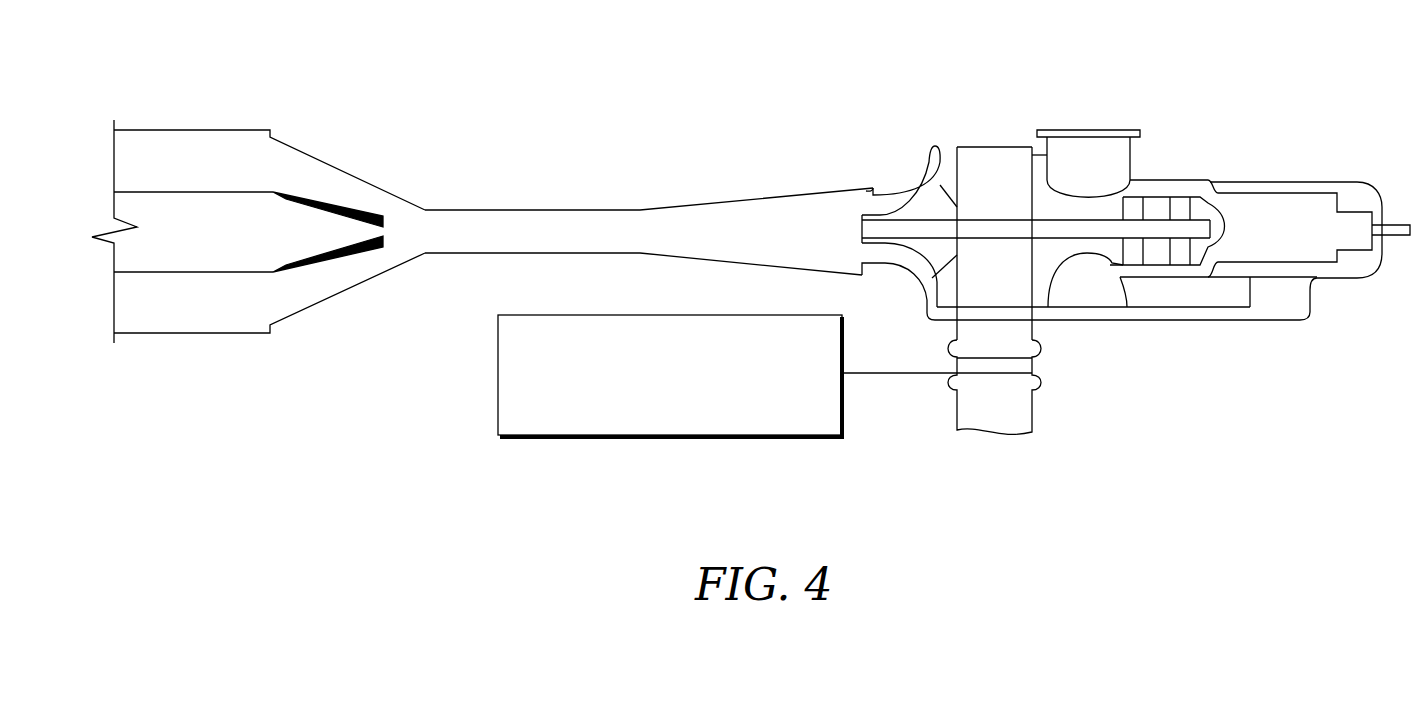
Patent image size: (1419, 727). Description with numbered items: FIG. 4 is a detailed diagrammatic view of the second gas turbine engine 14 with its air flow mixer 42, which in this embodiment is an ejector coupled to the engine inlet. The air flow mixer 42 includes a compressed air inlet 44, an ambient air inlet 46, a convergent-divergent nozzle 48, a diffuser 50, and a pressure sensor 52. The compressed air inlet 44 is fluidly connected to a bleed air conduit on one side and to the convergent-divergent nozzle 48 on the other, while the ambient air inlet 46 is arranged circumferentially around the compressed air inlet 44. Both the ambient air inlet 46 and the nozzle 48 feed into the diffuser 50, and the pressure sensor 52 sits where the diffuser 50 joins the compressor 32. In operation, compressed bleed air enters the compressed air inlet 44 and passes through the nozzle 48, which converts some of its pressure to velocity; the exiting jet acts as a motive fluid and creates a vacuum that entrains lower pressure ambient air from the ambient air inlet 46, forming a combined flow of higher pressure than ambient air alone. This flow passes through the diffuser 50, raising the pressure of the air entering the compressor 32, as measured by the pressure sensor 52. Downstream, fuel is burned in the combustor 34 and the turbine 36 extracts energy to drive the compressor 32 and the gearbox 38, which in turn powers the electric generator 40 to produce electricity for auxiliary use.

The second gas turbine engine 14 is at (1117, 242).
The compressor 32 is at (907, 185).
The combustor 34 is at (1355, 238).
The turbine 36 is at (1159, 211).
The gearbox 38 is at (1037, 368).
The electric generator 40 is at (657, 437).
The air flow mixer 42 is at (482, 221).
The compressed air inlet 44 is at (138, 188).
The ambient air inlet 46 is at (222, 335).
The convergent-divergent nozzle 48 is at (325, 217).
The diffuser 50 is at (730, 195).
The pressure sensor 52 is at (868, 190).